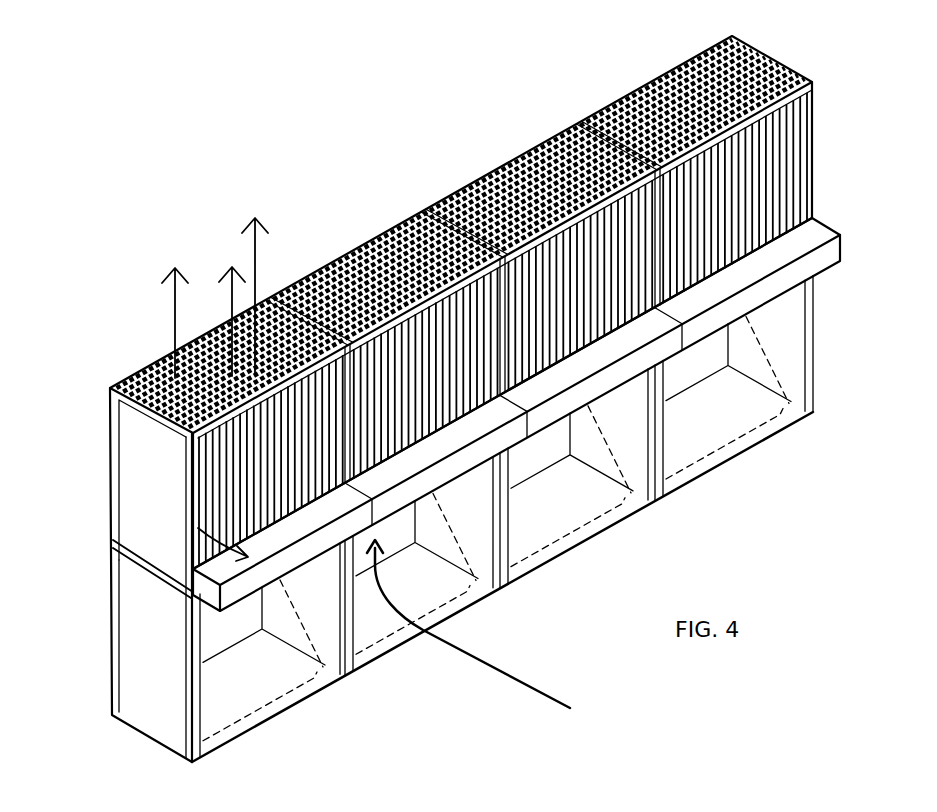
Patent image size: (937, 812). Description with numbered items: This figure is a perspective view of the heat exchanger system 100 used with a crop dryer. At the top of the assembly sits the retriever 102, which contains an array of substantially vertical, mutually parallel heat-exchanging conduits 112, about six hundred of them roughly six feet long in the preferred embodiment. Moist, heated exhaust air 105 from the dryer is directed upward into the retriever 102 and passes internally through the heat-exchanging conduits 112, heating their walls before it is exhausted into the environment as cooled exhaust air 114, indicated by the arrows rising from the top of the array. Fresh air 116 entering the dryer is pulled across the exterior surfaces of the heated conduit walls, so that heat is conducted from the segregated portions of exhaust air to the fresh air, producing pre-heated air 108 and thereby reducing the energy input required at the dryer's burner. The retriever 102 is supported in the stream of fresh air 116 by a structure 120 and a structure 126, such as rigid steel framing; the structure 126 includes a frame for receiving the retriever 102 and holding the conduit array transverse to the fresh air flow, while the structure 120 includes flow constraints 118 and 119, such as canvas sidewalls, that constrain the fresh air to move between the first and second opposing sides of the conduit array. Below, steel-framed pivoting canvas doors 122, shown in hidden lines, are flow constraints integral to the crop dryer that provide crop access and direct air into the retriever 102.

The heat exchanger system 100 is at (385, 165).
The retriever 102 is at (471, 285).
The moist, heated exhaust air 105 is at (492, 665).
The pre-heated air 108 is at (183, 563).
The heat-exchanging conduits 112 is at (792, 172).
The cooled exhaust air 114 is at (174, 328).
The fresh air 116 is at (424, 519).
The flow constraint 118 is at (150, 630).
The flow constraint 119 is at (137, 428).
The structure 120 is at (110, 482).
The steel-framed pivoting canvas doors 122 is at (273, 703).
The structure 126 is at (244, 556).